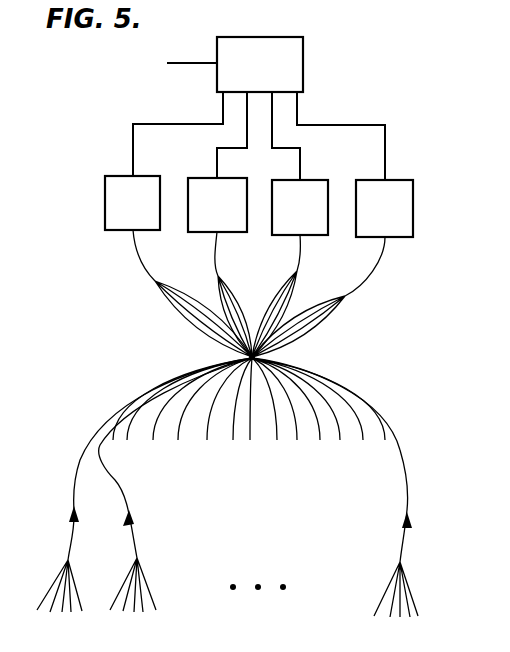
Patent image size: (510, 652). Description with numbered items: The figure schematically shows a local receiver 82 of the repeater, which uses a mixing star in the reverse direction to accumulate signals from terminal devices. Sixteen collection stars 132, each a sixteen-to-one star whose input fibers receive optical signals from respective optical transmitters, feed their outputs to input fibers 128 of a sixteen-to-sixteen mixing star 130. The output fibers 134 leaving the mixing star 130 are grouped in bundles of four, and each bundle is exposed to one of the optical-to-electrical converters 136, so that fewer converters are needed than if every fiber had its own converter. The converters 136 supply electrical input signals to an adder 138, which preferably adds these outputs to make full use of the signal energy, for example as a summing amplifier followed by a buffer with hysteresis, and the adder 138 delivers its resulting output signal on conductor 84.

The local receiver 82 is at (448, 120).
The conductor 84 is at (188, 63).
The input fiber 128 is at (73, 488).
The 16-to-16 mixing star 130 is at (312, 357).
The 16-to-1 collection star 132 is at (112, 572).
The output fibers 134 is at (190, 322).
The optical-to-electrical converters 136 is at (194, 178).
The adder 138 is at (303, 80).